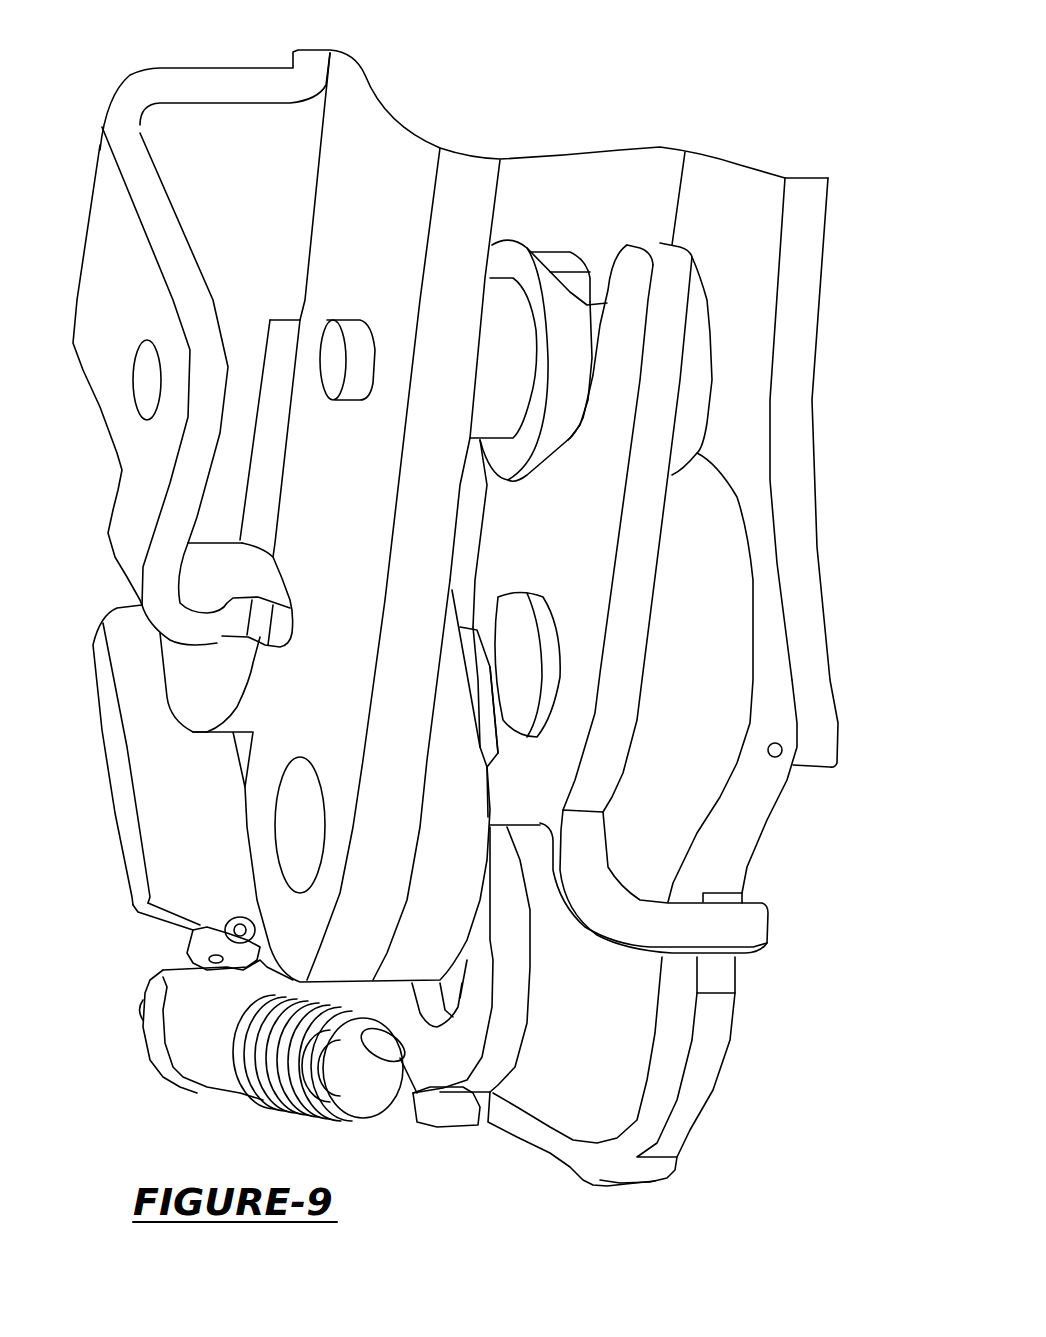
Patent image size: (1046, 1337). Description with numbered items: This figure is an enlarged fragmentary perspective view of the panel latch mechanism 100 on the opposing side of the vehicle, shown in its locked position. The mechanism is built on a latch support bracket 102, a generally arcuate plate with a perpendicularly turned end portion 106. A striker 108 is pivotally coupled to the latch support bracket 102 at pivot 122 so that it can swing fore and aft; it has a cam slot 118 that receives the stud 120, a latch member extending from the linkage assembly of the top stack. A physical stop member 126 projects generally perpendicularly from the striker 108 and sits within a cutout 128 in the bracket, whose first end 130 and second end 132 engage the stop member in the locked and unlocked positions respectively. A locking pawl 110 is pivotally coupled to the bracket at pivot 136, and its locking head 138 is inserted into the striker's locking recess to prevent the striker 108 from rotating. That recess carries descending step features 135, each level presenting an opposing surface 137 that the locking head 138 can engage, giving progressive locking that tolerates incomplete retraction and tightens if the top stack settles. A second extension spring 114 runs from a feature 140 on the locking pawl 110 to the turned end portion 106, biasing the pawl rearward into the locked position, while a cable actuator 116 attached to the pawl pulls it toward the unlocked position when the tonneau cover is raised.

The panel latch mechanism 100 is at (547, 58).
The latch support bracket 102 is at (817, 552).
The perpendicularly turned end portion 106 is at (117, 745).
The striker 108 is at (655, 590).
The locking pawl 110 is at (527, 1000).
The second extension spring 114 is at (300, 1100).
The cable actuator 116 is at (193, 963).
The cam slot 118 is at (607, 303).
The stud 120 is at (710, 312).
The pivot 122 is at (533, 593).
The physical stop member 126 is at (770, 922).
The cutout 128 is at (788, 827).
The first end 130 is at (740, 970).
The second end 132 is at (768, 757).
The step features 135 is at (477, 630).
The pivot 136 is at (490, 983).
The opposing surface 137 is at (470, 653).
The locking head 138 is at (480, 693).
The feature 140 is at (455, 1130).